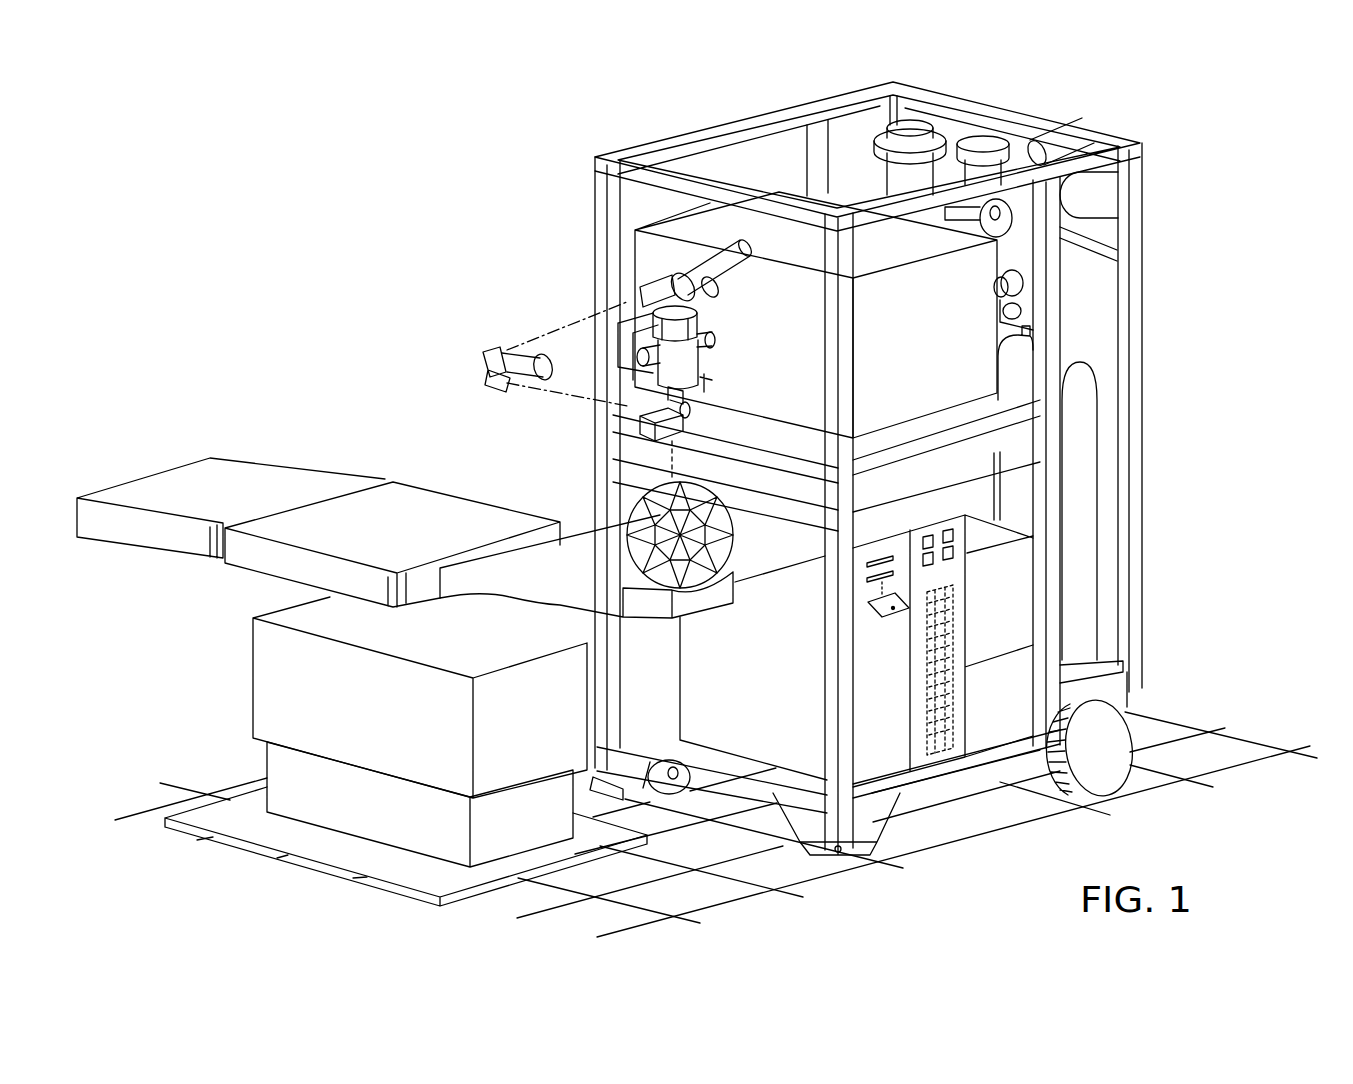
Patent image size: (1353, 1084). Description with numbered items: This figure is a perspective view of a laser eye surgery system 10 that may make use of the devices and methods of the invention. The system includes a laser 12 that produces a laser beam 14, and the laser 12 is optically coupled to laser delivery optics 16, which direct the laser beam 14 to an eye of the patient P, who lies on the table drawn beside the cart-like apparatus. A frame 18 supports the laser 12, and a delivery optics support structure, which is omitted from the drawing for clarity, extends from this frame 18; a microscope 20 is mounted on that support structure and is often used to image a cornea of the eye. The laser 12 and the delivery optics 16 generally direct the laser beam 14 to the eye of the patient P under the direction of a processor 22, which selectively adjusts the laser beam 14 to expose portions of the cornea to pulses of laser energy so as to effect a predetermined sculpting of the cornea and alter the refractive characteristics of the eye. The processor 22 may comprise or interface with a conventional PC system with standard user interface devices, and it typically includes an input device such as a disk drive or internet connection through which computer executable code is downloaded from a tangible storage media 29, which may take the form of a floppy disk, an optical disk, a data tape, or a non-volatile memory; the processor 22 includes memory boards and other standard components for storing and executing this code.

The laser eye surgery system 10 is at (262, 182).
The laser 12 is at (924, 479).
The laser beam 14 is at (566, 328).
The laser delivery optics 16 is at (626, 403).
The frame 18 is at (720, 138).
The microscope 20 is at (700, 308).
The processor 22 is at (965, 796).
The tangible storage media 29 is at (882, 604).
The patient P is at (733, 540).